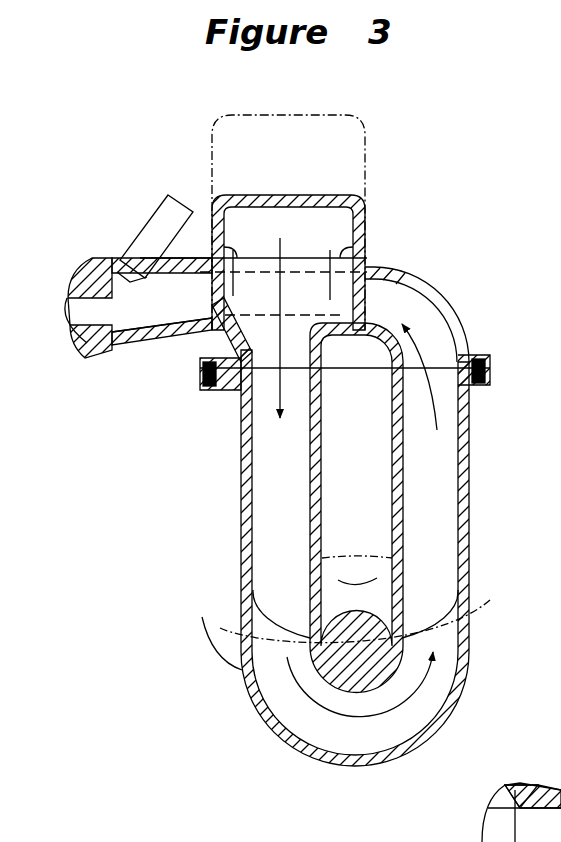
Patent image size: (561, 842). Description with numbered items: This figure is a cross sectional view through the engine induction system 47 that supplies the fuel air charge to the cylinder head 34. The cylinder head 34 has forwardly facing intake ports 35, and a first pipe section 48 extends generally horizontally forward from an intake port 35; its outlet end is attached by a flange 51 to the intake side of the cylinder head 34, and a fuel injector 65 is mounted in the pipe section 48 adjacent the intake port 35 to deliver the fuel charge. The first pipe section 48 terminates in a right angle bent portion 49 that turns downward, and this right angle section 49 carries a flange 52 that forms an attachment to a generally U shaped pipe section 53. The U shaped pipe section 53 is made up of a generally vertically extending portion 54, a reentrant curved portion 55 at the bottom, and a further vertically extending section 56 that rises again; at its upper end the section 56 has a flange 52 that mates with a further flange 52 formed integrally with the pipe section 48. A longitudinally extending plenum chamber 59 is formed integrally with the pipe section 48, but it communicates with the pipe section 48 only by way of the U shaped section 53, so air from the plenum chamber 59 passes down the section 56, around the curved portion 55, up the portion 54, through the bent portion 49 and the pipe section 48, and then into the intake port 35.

The cylinder head 34 is at (100, 250).
The intake ports 35 is at (80, 344).
The induction system 47 is at (442, 230).
The first pipe sections 48 is at (185, 340).
The right angle bent portions 49 is at (447, 310).
The flanges 51 is at (112, 338).
The flanges 52 is at (205, 390).
The U shaped pipe section 53 is at (240, 487).
The vertically extending portion 54 is at (470, 578).
The reentrant curved portion 55 is at (333, 765).
The vertically extending section 56 is at (337, 613).
The plenum chamber 59 is at (330, 194).
The fuel injectors 65 is at (160, 220).